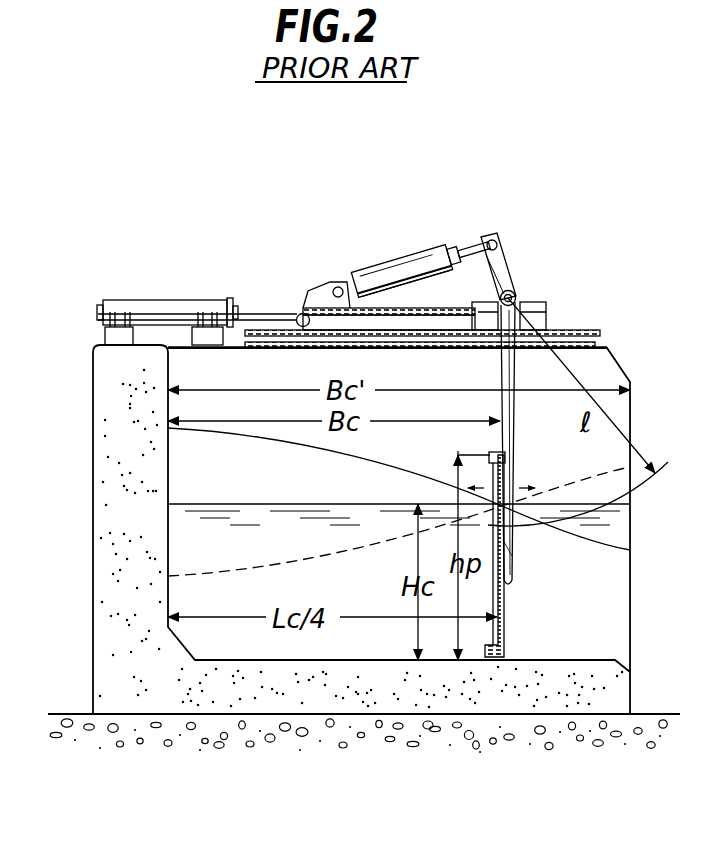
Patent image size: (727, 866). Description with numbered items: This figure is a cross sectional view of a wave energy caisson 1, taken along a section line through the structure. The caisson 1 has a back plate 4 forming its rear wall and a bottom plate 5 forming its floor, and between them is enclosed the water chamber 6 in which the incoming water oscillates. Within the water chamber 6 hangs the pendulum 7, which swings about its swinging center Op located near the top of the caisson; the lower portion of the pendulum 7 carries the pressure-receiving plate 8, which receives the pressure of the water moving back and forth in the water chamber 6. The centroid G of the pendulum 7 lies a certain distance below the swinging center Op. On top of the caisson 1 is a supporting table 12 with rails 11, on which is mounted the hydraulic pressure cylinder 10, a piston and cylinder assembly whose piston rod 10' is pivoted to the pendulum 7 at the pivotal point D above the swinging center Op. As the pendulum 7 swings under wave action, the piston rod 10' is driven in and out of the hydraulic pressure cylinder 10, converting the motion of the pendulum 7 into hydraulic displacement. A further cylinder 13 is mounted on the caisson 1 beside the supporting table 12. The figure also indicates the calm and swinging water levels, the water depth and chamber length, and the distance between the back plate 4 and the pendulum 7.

The caisson 1 is at (92, 432).
The back plate 4 is at (115, 508).
The bottom plate 5 is at (353, 714).
The water chamber 6 is at (178, 565).
The pendulum 7 is at (506, 468).
The pressure-receiving plate of the pendulum 8 is at (505, 612).
The hydraulic pressure cylinder or piston and cylinder assembly 10 is at (382, 242).
The piston rod 10' is at (490, 217).
The rails 11 is at (595, 345).
The supporting table 12 is at (548, 320).
The cylinder 13 is at (165, 306).
The pivotal point of the cylinder pivoted to the pendulum D is at (505, 236).
The swinging center of the pendulum Op is at (515, 294).
The centroid of the pendulum G is at (512, 548).